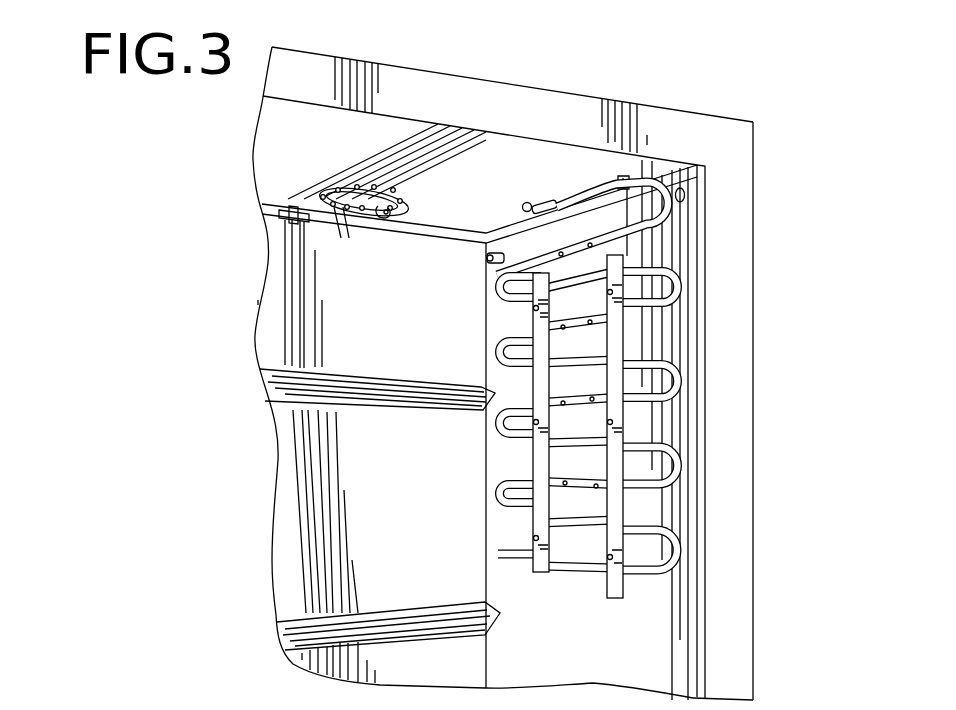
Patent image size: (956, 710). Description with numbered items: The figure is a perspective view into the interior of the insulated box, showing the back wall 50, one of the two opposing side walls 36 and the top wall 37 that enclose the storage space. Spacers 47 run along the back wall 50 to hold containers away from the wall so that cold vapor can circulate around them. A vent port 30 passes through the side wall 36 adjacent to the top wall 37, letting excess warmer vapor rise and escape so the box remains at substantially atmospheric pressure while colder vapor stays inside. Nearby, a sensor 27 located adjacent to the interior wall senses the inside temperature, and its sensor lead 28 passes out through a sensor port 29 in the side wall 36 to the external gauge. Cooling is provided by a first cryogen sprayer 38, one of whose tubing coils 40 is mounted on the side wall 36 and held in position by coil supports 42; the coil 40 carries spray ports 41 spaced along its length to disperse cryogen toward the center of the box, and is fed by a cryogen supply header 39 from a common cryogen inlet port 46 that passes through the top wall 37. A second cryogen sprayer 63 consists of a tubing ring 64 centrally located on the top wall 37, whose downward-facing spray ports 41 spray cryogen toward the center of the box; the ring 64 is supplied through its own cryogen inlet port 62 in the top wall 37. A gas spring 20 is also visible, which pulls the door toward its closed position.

The gas spring 20 is at (396, 340).
The sensor 27 is at (538, 205).
The sensor lead 28 is at (627, 175).
The sensor port 29 is at (688, 195).
The vent port 30 is at (485, 261).
The side wall 36 is at (756, 627).
The top wall 37 is at (343, 58).
The first cryogen sprayer 38 is at (688, 498).
The cryogen supply header 39 is at (458, 234).
The tubing coil 40 is at (537, 395).
The spray port 41 is at (332, 214).
The coil support 42 is at (607, 598).
The cryogen inlet port 46 is at (293, 208).
The spacer 47 is at (387, 407).
The back wall 50 is at (267, 330).
The cryogen inlet port 62 is at (390, 210).
The second cryogen sprayer 63 is at (287, 124).
The tubing ring 64 is at (348, 188).